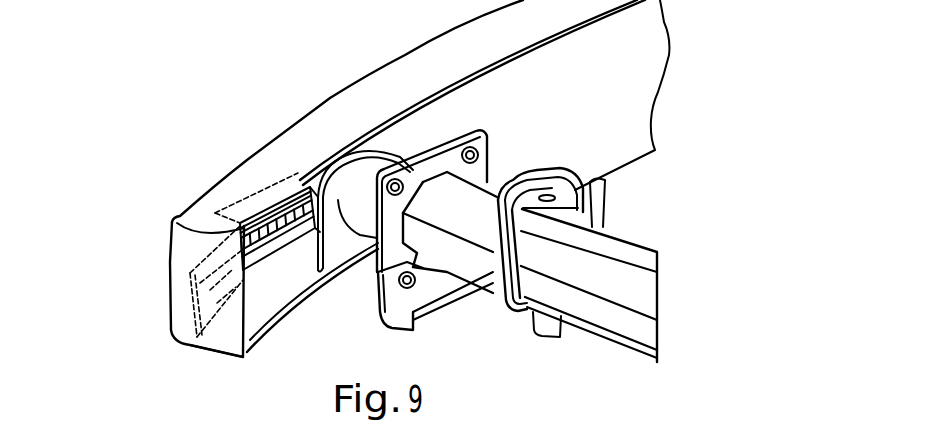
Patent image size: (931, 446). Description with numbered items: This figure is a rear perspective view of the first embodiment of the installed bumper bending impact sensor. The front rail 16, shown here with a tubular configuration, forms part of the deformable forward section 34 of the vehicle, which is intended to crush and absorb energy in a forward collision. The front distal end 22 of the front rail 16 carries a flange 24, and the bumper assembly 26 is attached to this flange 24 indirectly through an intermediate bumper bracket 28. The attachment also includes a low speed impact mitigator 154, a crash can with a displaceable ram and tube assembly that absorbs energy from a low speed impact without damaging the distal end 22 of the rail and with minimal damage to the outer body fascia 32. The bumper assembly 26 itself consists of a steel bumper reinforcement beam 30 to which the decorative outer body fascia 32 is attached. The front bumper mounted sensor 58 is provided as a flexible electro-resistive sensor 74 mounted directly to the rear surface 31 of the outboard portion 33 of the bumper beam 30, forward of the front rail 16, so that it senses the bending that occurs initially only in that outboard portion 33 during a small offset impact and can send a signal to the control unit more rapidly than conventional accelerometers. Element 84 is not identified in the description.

The front rail 16 is at (612, 263).
The front distal end 22 is at (575, 245).
The flange 24 is at (463, 128).
The bumper assembly 26 is at (205, 321).
The bumper bracket 28 is at (358, 217).
The bumper reinforcement beam 30 is at (258, 267).
The rear surface 31 is at (418, 135).
The outer body fascia 32 is at (274, 150).
The outboard portion 33 is at (225, 335).
The deformable forward section 34 is at (700, 86).
The front bumper mounted sensor 58 is at (306, 188).
The flexible electro-resistive sensor 74 is at (212, 298).
The connector strip 84 is at (262, 245).
The impact mitigator 154 is at (466, 262).